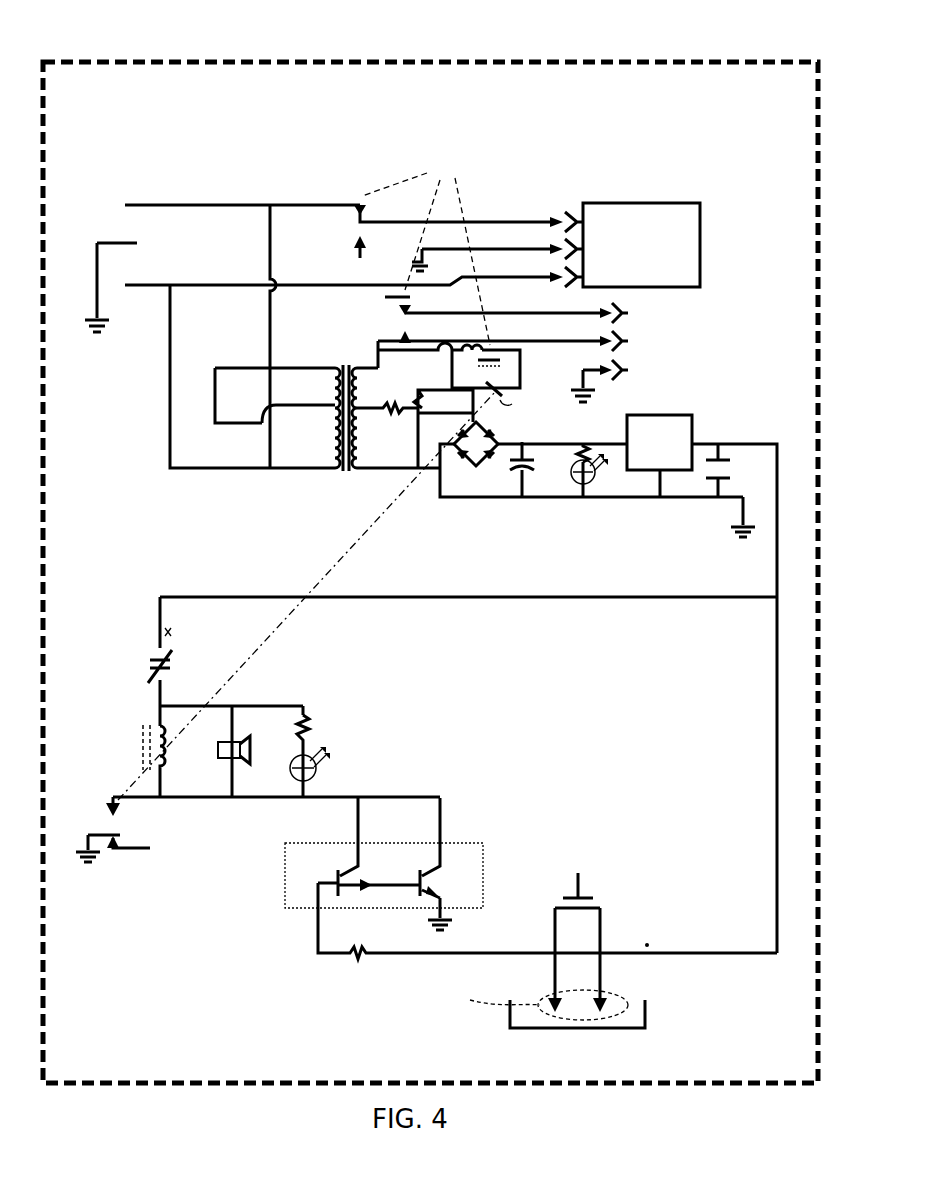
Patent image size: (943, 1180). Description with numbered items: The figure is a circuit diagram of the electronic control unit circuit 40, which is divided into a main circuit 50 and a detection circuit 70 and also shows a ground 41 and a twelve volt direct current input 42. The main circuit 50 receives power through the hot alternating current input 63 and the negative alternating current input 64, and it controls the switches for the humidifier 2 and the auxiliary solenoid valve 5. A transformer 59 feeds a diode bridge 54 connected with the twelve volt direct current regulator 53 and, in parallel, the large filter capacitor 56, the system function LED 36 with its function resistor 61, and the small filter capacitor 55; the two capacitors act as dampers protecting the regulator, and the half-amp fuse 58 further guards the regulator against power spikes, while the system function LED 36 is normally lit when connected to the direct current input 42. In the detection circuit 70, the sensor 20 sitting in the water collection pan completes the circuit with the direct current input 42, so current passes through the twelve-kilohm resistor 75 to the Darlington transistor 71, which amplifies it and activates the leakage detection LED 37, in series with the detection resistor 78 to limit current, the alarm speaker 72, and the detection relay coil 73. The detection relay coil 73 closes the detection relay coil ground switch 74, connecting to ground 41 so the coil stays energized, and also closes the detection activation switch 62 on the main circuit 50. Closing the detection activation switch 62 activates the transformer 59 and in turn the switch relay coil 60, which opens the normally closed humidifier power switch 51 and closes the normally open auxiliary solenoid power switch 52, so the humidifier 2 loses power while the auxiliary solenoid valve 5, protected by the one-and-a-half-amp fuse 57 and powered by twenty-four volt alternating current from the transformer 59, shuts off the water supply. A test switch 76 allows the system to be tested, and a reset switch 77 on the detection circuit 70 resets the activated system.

The electronic control unit circuit 40 is at (310, 60).
The humidifier 2 is at (648, 218).
The auxiliary solenoid valve 5 is at (688, 320).
The ground 41 is at (100, 335).
The 12 Volt direct current input 42 is at (175, 622).
The main circuit 50 is at (172, 492).
The humidifier power switch 51 is at (352, 238).
The auxiliary solenoid power switch 52 is at (400, 336).
The 12 voltage direct current regulator 53 is at (655, 467).
The diode bridge 54 is at (460, 448).
The 0.1 mfd capacitor 55 is at (712, 444).
The 2200 mfd capacitor 56 is at (522, 472).
The 1.5 amp fuse 57 is at (410, 412).
The 0.5 amp fuse 58 is at (385, 414).
The transformer 59 is at (335, 470).
The switch relay coil 60 is at (495, 348).
The function 1 k resistor 61 is at (590, 457).
The detection activation switch 62 is at (500, 400).
The 115 volt alternating current input hot 63 is at (140, 205).
The 115 volt alternating current input negative 64 is at (140, 283).
The system function LED 36 is at (590, 482).
The leakage detection LED 37 is at (322, 770).
The detection circuit 70 is at (240, 946).
The Darlington transistor 71 is at (472, 843).
The alarm speaker 72 is at (262, 757).
The detection relay coil 73 is at (140, 752).
The detection relay coil ground switch 74 is at (108, 815).
The 12 k resistor 75 is at (362, 963).
The test switch 76 is at (575, 875).
The reset switch 77 is at (155, 660).
The detection 1 k resistor 78 is at (318, 725).
The sensor 20 is at (632, 1010).